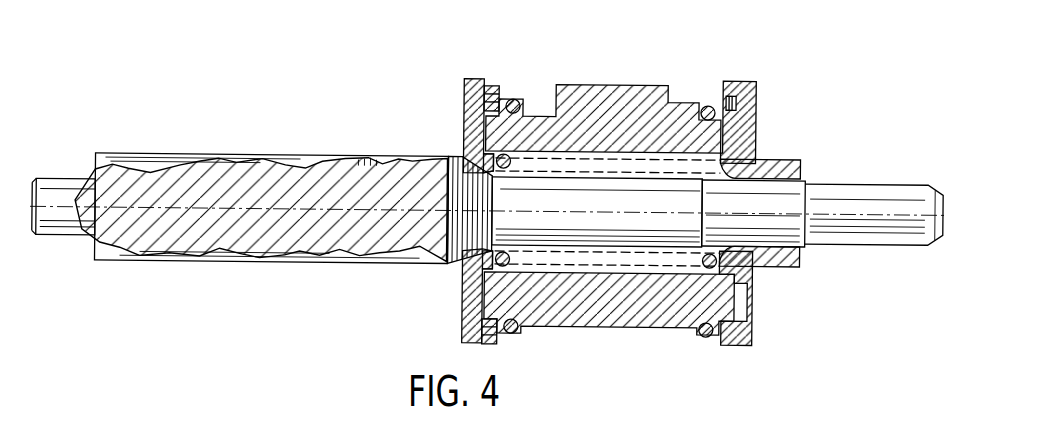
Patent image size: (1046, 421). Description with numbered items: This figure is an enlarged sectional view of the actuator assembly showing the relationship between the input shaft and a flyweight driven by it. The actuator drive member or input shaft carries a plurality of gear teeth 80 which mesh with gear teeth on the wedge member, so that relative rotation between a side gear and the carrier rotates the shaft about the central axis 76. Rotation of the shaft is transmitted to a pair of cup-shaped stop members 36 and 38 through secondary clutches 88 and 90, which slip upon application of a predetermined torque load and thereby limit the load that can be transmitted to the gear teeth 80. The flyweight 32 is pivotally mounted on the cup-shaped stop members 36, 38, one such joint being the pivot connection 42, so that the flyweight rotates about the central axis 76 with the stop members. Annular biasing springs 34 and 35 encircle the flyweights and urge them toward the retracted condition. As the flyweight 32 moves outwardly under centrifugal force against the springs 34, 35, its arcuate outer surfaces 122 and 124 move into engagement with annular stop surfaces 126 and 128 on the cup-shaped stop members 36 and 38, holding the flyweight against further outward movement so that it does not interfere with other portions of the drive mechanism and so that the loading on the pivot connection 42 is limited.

The central axis 76 is at (145, 203).
The gear teeth 80 is at (262, 157).
The secondary clutch 88 is at (473, 170).
The arcuate outer surface 122 is at (470, 124).
The cup-shaped stop member 36 is at (480, 77).
The annular stop surface 126 is at (498, 92).
The annular biasing spring 35 is at (514, 100).
The flyweight 32 is at (603, 108).
The annular biasing spring 34 is at (707, 104).
The cup-shaped stop member 38 is at (740, 77).
The annular stop surface 128 is at (738, 94).
The arcuate outer surface 124 is at (747, 120).
The secondary clutch 90 is at (797, 172).
The pivot connection 42 is at (753, 297).